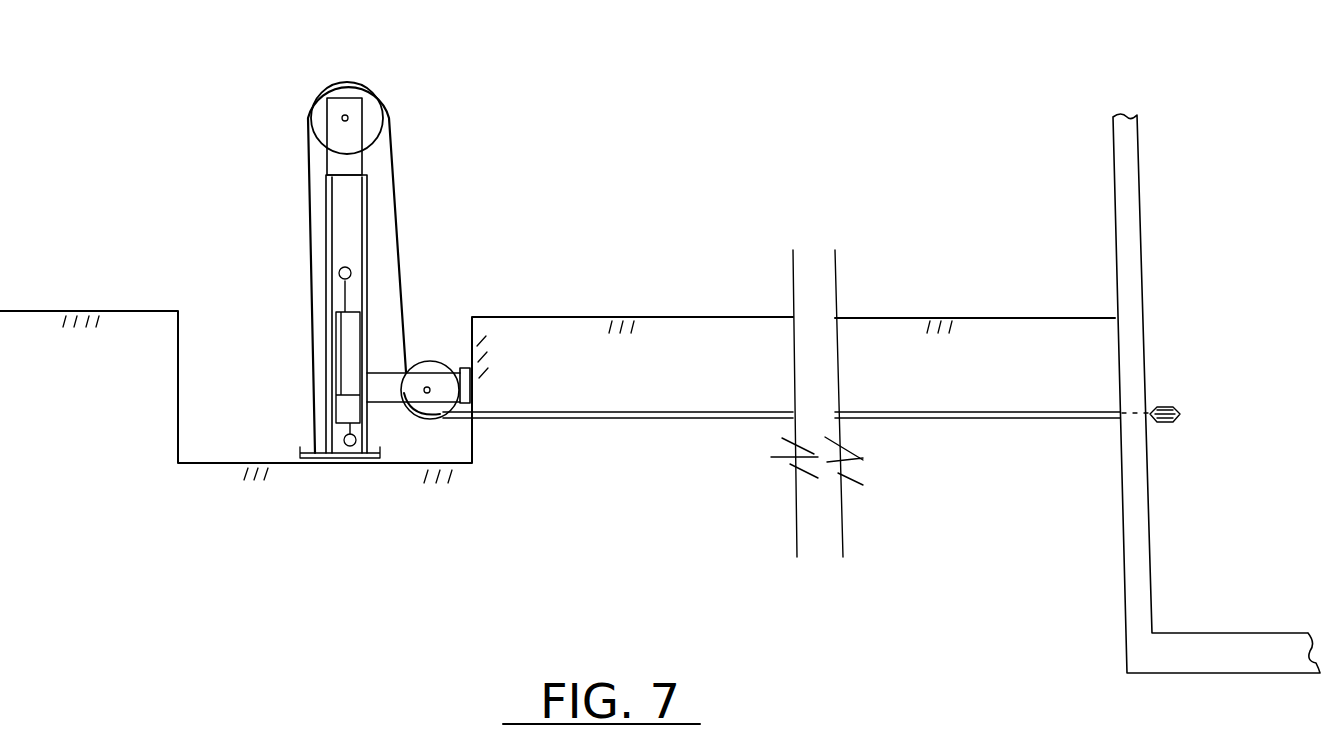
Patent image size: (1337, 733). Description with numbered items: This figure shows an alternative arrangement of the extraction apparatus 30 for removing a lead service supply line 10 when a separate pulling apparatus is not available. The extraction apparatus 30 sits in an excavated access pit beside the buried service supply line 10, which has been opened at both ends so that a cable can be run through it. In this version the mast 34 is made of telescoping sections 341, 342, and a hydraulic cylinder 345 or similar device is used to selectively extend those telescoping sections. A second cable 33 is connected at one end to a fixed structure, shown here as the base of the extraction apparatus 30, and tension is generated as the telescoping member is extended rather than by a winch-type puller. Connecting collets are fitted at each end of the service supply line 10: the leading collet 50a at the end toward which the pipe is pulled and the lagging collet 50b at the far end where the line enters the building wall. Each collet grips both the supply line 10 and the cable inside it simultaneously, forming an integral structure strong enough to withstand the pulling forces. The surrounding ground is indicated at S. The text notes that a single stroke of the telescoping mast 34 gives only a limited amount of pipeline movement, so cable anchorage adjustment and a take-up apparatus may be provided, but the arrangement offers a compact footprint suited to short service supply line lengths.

The service supply line 10 is at (678, 422).
The extraction apparatus 30 is at (512, 147).
The second cable 33 is at (310, 172).
The mast 34 is at (397, 234).
The telescoping section 341 is at (352, 155).
The telescoping section 342 is at (372, 293).
The hydraulic cylinder 345 is at (345, 345).
The leading collet 50a is at (458, 427).
The lagging collet 50b is at (1172, 401).
The soil S is at (960, 385).